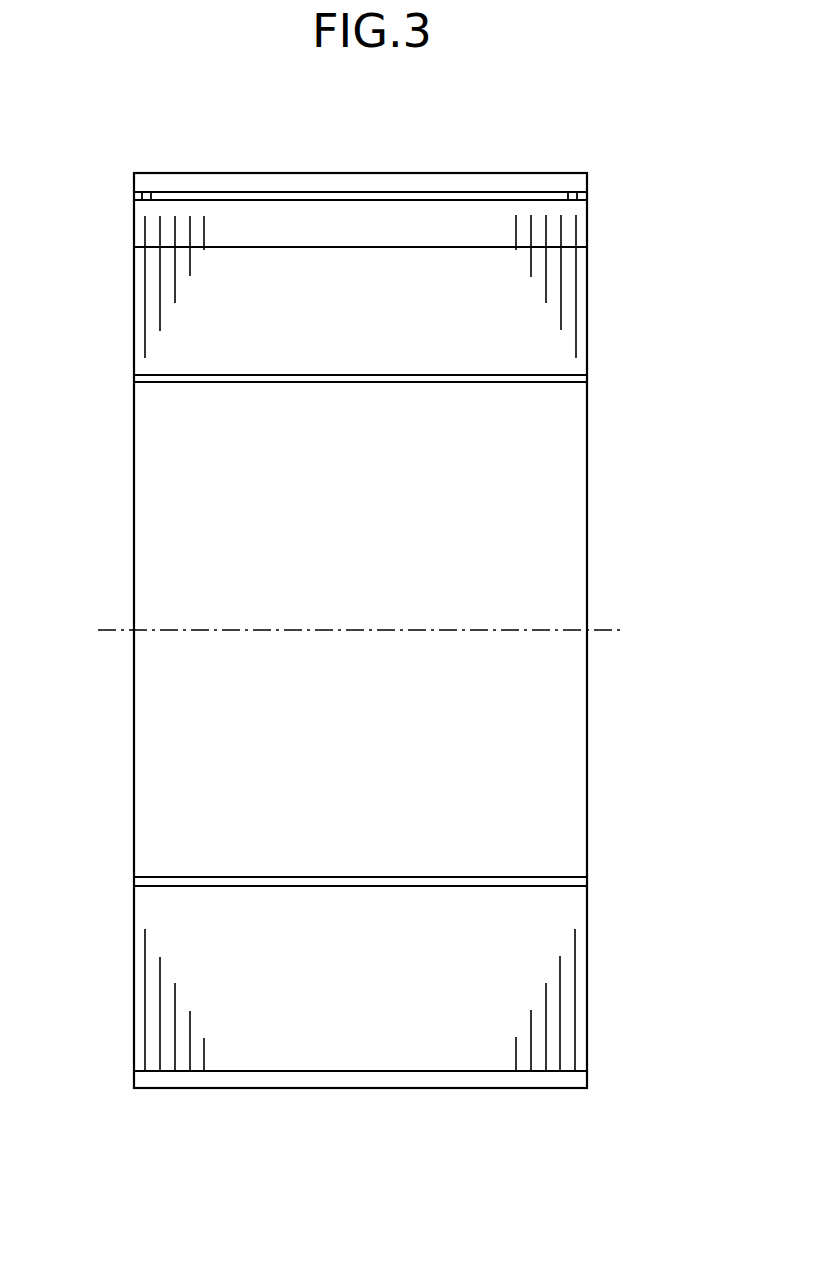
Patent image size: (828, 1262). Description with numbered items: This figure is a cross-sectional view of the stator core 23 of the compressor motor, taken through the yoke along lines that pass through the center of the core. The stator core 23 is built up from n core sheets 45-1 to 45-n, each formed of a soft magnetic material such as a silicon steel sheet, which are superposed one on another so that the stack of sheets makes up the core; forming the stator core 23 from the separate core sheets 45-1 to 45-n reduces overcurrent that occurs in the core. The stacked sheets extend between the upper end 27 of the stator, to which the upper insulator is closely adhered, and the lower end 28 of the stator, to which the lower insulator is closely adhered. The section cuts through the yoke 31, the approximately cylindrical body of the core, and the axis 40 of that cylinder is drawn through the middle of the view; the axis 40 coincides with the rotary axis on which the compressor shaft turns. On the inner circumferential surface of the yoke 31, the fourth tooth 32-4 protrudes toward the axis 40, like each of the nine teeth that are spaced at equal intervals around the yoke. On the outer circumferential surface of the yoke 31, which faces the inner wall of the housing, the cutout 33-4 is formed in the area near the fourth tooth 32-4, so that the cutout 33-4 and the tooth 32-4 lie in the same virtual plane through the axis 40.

The stator core 23 is at (546, 165).
The core sheet 45-1 is at (360, 148).
The core sheet 45-n is at (378, 172).
The upper end 27 is at (134, 290).
The lower end 28 is at (587, 292).
The axis 40 is at (606, 629).
The fourth tooth 32-4 is at (587, 913).
The yoke 31 is at (587, 1023).
The cutout 33-4 is at (523, 1072).